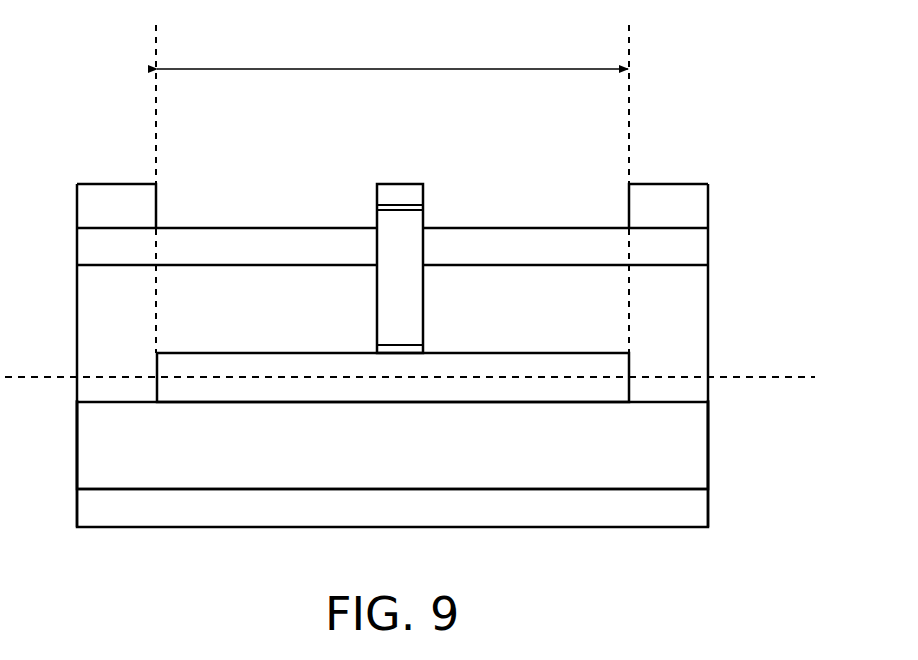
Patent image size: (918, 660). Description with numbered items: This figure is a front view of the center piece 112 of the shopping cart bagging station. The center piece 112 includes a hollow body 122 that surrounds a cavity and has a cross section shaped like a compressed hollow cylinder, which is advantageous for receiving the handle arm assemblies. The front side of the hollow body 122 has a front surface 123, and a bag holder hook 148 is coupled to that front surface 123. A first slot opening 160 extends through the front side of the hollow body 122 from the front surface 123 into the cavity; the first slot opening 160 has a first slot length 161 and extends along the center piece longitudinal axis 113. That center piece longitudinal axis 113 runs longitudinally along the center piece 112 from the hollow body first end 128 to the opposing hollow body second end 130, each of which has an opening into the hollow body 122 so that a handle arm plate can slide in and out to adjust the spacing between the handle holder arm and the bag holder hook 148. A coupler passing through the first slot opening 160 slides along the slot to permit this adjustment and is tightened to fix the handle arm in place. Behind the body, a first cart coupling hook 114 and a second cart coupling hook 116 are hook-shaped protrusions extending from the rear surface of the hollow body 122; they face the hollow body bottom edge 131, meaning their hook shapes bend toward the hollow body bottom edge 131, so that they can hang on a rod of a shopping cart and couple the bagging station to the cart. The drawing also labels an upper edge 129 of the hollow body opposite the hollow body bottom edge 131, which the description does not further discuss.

The center piece 112 is at (366, 140).
The center piece longitudinal axis 113 is at (743, 377).
The first cart coupling hook 114 is at (124, 197).
The second cart coupling hook 116 is at (659, 205).
The hollow body 122 is at (668, 333).
The front surface 123 is at (334, 470).
The hollow body first end 128 is at (70, 535).
The top layer 129 is at (277, 228).
The hollow body second end 130 is at (718, 530).
The hollow body bottom edge 131 is at (196, 527).
The bag holder hook 148 is at (401, 230).
The first slot opening 160 is at (530, 382).
The first slot length 161 is at (383, 69).